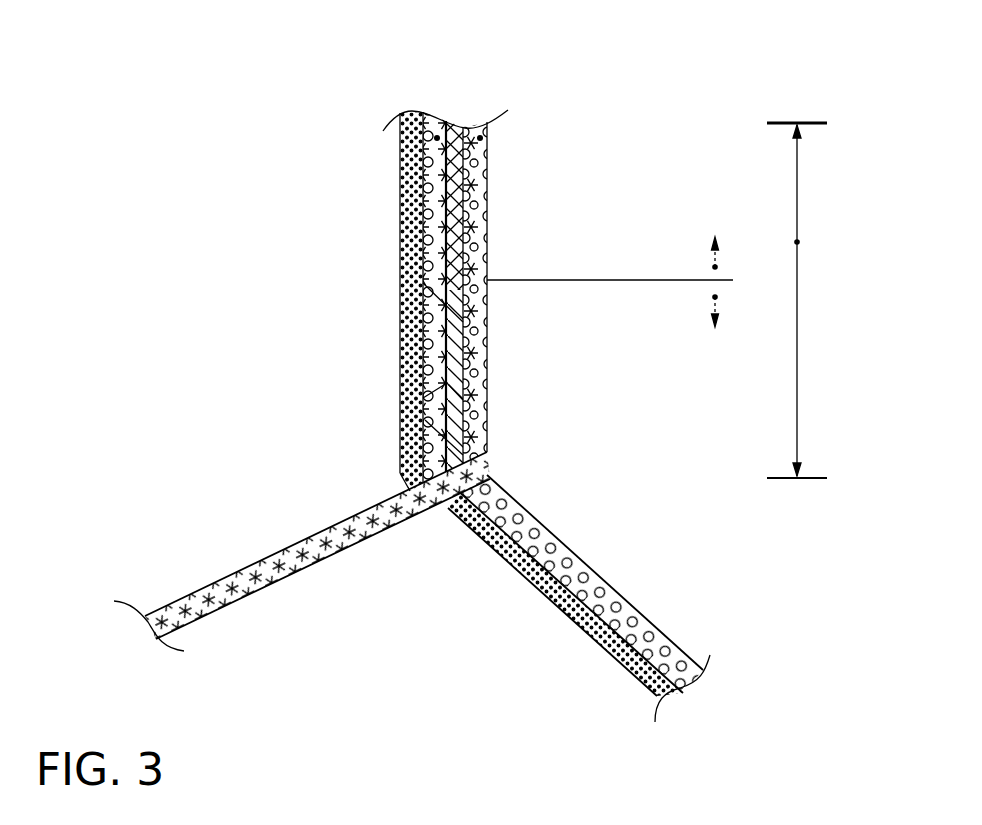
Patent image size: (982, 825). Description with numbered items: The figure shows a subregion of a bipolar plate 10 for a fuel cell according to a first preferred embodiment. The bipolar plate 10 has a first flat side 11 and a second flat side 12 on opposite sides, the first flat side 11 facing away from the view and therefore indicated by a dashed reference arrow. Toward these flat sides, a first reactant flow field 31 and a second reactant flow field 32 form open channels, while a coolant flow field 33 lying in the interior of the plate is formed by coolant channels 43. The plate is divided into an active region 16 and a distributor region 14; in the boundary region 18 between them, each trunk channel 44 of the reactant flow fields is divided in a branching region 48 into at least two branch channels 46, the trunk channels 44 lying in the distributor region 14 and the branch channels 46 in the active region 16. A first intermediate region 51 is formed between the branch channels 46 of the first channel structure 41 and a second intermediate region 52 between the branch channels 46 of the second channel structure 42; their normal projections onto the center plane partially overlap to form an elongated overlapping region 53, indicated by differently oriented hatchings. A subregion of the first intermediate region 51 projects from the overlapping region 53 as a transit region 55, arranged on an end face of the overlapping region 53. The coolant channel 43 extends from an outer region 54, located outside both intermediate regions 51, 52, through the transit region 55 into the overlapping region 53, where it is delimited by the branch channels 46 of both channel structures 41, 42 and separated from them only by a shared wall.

The bipolar plate 10 is at (602, 57).
The first flat side 11 is at (402, 272).
The second flat side 12 is at (405, 155).
The distributor region 14 is at (715, 297).
The active region 16 is at (715, 267).
The boundary region 18 is at (797, 242).
The first reactant flow field 31 is at (604, 598).
The second reactant flow field 32 is at (302, 551).
The coolant flow field 33 is at (588, 636).
The first channel structure 41 is at (622, 590).
The second channel structure 42 is at (248, 555).
The coolant channel 43 is at (455, 365).
The trunk channel 44 is at (332, 544).
The branch channel 46 is at (437, 138).
The branching region 48 is at (460, 300).
The first intermediate region 51 is at (462, 172).
The second intermediate region 52 is at (477, 178).
The overlapping region 53 is at (455, 213).
The outer region 54 is at (298, 359).
The transit region 55 is at (458, 422).